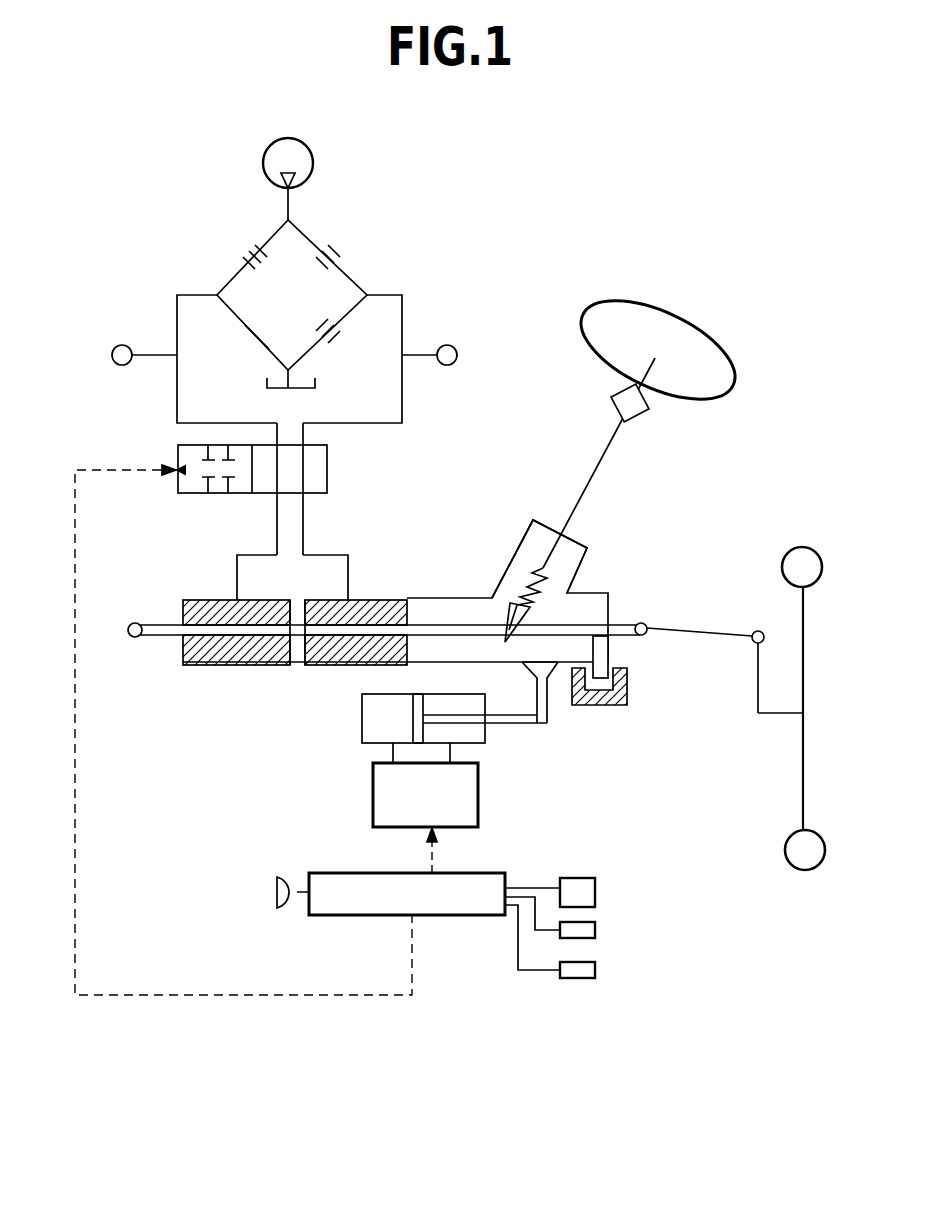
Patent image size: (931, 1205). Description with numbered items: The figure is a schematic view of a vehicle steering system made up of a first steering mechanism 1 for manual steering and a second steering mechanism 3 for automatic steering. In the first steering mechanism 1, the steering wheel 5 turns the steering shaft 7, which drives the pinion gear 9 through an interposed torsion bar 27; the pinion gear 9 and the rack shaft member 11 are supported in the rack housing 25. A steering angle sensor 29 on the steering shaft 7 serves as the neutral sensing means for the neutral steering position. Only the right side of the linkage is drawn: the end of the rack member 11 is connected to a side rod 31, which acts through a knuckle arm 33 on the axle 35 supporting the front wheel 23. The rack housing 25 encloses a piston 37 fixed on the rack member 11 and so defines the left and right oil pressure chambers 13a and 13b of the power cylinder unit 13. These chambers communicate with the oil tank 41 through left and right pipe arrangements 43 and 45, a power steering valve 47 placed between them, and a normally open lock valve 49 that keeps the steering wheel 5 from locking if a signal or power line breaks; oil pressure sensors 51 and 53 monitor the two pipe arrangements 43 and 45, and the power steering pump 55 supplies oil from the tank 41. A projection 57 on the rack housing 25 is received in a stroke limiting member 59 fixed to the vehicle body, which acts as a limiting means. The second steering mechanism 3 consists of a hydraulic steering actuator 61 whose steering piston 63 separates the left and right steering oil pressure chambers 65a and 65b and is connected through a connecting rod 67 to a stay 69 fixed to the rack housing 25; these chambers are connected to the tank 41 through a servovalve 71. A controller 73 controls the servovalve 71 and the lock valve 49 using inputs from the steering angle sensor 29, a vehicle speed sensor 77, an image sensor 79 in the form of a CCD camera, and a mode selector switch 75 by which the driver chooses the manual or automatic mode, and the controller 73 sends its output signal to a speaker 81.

The first steering mechanism 1 is at (720, 320).
The second steering mechanism 3 is at (590, 829).
The steering wheel 5 is at (625, 300).
The steering shaft 7 is at (592, 475).
The pinion gear 9 is at (517, 603).
The rack shaft member 11 is at (428, 600).
The power cylinder unit 13 is at (253, 612).
The left oil pressure chamber 13a is at (195, 605).
The right oil pressure chamber 13b is at (350, 610).
The front wheel 23 is at (805, 663).
The rack housing 25 is at (590, 592).
The torsion bar 27 is at (513, 603).
The steering angle sensor 29 is at (637, 405).
The side rod 31 is at (700, 628).
The knuckle arm 33 is at (757, 706).
The axle 35 is at (775, 715).
The piston 37 is at (297, 657).
The oil tank 41 is at (318, 385).
The left pipe arrangement 43 is at (276, 522).
The right pipe arrangement 45 is at (303, 508).
The power steering valve 47 is at (350, 276).
The lock valve 49 is at (160, 433).
The oil pressure sensor 51 is at (118, 345).
The oil pressure sensor 53 is at (448, 345).
The power steering pump 55 is at (313, 161).
The projection 57 is at (612, 666).
The stroke limiting member 59 is at (620, 705).
The steering actuator 61 is at (407, 765).
The steering piston 63 is at (413, 725).
The left steering oil pressure chamber 65a is at (368, 722).
The right steering oil pressure chamber 65b is at (468, 733).
The connecting rod 67 is at (530, 725).
The stay 69 is at (548, 700).
The servovalve 71 is at (370, 820).
The controller 73 is at (458, 915).
The mode selector switch 75 is at (598, 892).
The vehicle speed sensor 77 is at (598, 931).
The image sensor 79 is at (598, 971).
The speaker 81 is at (285, 910).